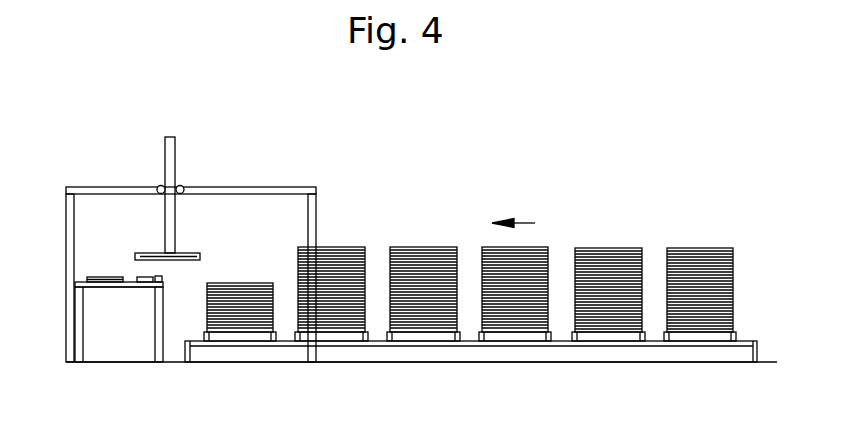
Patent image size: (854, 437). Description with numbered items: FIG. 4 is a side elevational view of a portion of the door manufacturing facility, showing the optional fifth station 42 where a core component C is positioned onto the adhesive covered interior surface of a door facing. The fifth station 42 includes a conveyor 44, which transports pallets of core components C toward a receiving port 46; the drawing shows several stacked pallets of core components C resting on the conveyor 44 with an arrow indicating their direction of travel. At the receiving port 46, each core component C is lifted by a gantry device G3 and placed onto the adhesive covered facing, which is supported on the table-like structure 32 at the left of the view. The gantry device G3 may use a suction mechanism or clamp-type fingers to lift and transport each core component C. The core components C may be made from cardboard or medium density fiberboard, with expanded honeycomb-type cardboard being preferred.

The fifth station 42 is at (280, 160).
The gantry device G3 is at (144, 234).
The table 32 is at (98, 264).
The receiving port 46 is at (259, 264).
The core component C is at (201, 258).
The conveyor 44 is at (375, 347).